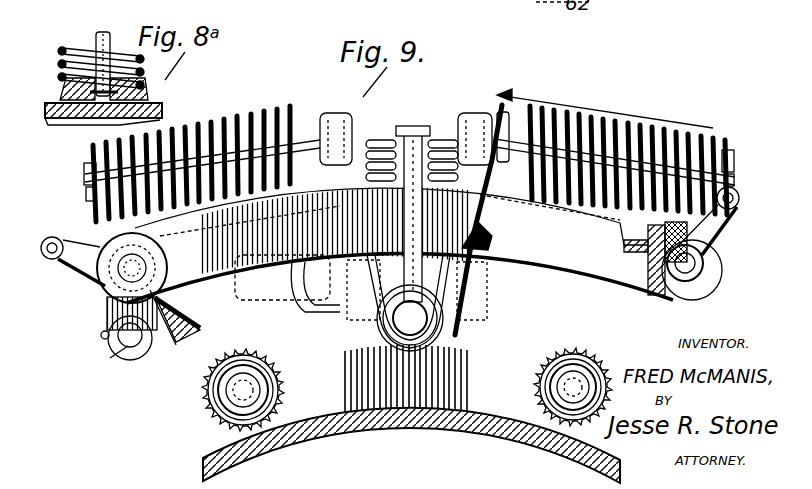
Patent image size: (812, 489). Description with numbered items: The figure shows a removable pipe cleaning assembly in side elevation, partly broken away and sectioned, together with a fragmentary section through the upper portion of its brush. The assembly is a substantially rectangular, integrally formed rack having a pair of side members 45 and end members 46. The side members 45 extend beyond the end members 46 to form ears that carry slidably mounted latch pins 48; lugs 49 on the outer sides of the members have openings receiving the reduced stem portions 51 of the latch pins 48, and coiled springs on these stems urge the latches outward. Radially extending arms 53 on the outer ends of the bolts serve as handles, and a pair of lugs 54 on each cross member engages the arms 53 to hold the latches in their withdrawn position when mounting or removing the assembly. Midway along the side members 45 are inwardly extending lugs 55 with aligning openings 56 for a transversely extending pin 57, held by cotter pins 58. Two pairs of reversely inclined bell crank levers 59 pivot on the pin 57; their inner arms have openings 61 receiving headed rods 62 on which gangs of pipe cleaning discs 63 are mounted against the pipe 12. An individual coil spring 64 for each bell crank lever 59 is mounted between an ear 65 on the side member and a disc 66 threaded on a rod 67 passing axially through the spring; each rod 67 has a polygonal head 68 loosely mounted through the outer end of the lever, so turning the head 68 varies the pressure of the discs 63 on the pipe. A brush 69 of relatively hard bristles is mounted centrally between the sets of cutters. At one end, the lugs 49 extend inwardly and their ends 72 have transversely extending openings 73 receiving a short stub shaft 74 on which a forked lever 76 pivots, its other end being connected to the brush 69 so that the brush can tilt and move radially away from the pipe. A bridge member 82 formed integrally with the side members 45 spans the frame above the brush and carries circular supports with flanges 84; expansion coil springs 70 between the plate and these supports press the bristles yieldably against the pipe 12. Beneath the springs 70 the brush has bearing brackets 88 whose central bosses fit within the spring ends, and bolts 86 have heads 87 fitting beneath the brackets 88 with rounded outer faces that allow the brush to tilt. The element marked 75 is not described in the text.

In FIG. 9, the pipe 12 is at (466, 420).
In FIG. 9, the side members 45 is at (400, 245).
In FIG. 9, the end members 46 is at (655, 276).
In FIG. 9, the latch pins 48 is at (168, 302).
In FIG. 9, the lugs 49 is at (107, 313).
In FIG. 9, the reduced stem portions 51 is at (692, 264).
In FIG. 9, the radially extending arms 53 is at (762, 190).
In FIG. 9, the lugs 54 is at (694, 240).
In FIG. 9, the inwardly extending lugs 55 is at (490, 243).
In FIG. 9, the aligning openings 56 is at (470, 312).
In FIG. 9, the transversely extending pin 57 is at (445, 322).
In FIG. 9, the cotter pins 58 is at (300, 312).
In FIG. 9, the bell crank levers 59 is at (347, 290).
In FIG. 9, the openings 61 is at (225, 418).
In FIG. 9, the headed rods 62 is at (226, 433).
In FIG. 9, the pipe cleaning discs 63 is at (206, 401).
In FIG. 9, the coil spring 64 is at (234, 122).
In FIG. 9, the ears 65 is at (288, 107).
In FIG. 9, the discs 66 is at (85, 176).
In FIG. 9, the rods 67 is at (87, 200).
In FIG. 9, the polygonal head 68 is at (350, 113).
In FIG. 8A, the brush 69 is at (158, 110).
In FIG. 9, the brush 69 is at (348, 408).
In FIG. 8A, the expansion coil springs 70 is at (63, 50).
In FIG. 9, the expansion coil springs 70 is at (458, 145).
In FIG. 9, the ends 72 is at (126, 358).
In FIG. 9, the transversely extending openings 73 is at (140, 360).
In FIG. 9, the stub shaft 74 is at (111, 353).
In FIG. 9, the small pin 75 is at (101, 336).
In FIG. 9, the lever 76 is at (195, 346).
In FIG. 9, the bridge member 82 is at (400, 128).
In FIG. 9, the flanges 84 is at (371, 136).
In FIG. 8A, the bolts 86 is at (100, 34).
In FIG. 8A, the heads 87 is at (78, 112).
In FIG. 8A, the bearing brackets 88 is at (60, 82).